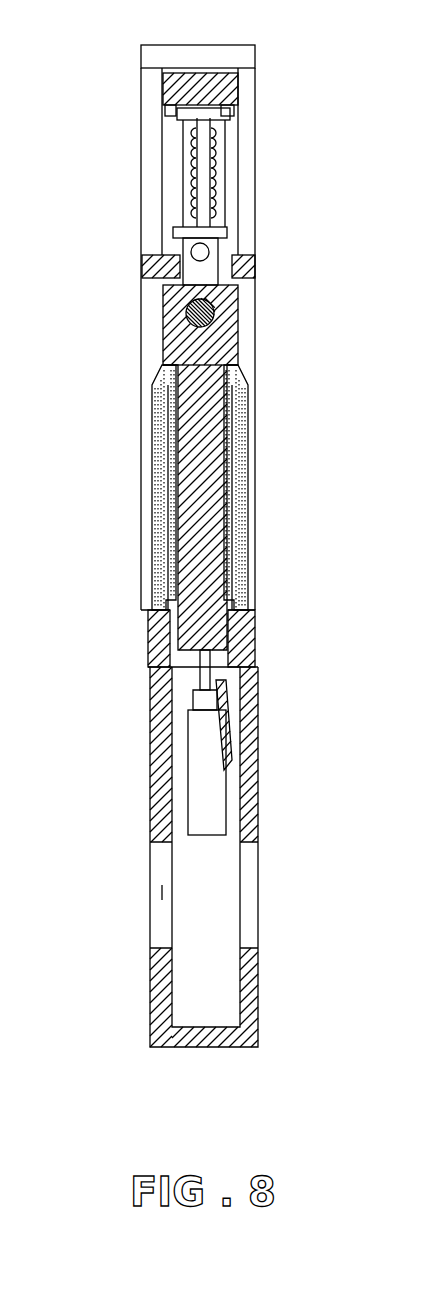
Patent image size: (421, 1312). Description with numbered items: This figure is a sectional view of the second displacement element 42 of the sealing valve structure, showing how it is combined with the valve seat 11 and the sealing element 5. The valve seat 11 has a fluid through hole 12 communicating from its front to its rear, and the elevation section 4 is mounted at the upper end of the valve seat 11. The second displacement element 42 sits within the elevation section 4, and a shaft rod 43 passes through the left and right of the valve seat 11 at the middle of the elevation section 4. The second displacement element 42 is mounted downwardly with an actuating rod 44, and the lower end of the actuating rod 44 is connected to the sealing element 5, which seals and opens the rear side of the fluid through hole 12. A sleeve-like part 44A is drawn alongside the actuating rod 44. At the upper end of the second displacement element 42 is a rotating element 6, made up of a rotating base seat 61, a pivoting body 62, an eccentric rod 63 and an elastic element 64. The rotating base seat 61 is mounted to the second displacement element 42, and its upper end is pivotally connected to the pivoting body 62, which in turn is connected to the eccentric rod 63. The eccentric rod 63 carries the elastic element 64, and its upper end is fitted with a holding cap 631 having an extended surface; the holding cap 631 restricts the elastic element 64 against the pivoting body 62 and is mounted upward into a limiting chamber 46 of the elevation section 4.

The elevation section 4 is at (143, 70).
The rotating element 6 is at (170, 177).
The holding cap 631 is at (170, 106).
The limiting chamber 46 is at (226, 112).
The elastic element 64 is at (184, 160).
The eccentric rod 63 is at (186, 186).
The pivoting body 62 is at (178, 232).
The rotating base seat 61 is at (153, 261).
The second displacement element 42 is at (172, 320).
The shaft rod 43 is at (213, 310).
The actuating rod 44 is at (200, 425).
The sleeve 44A is at (246, 405).
The valve seat 11 is at (150, 772).
The fluid through hole 12 is at (162, 892).
The sealing element 5 is at (208, 835).